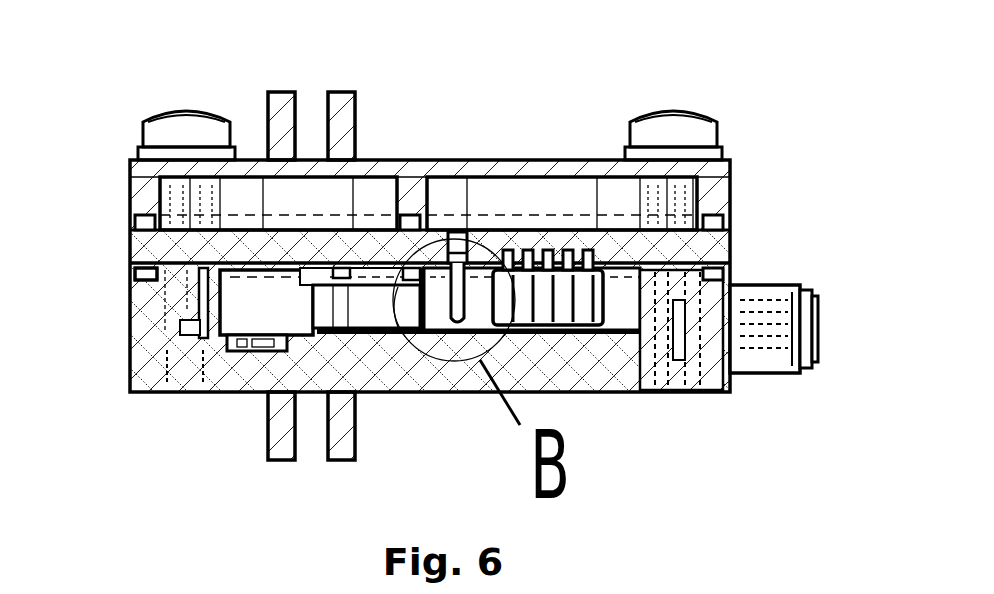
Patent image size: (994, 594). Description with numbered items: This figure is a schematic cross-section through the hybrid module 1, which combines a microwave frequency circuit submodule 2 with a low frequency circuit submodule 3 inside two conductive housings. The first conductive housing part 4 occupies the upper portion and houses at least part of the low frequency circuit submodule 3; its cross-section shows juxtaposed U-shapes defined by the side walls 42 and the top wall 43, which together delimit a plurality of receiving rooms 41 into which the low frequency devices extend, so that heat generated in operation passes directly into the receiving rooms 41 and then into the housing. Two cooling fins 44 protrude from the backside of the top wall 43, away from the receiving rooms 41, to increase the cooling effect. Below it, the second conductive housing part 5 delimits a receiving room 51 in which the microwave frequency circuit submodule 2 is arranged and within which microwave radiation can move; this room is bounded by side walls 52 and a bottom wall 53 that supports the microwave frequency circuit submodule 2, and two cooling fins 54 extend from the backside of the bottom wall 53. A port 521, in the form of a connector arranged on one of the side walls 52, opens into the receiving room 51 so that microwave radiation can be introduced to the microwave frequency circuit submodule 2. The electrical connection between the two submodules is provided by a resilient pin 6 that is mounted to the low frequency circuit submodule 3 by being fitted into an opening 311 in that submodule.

The hybrid module 1 is at (118, 80).
The microwave frequency circuit submodule 2 is at (628, 311).
The low frequency circuit submodule 3 is at (566, 266).
The first conductive housing part 4 is at (433, 147).
The second conductive housing part 5 is at (484, 319).
The resilient pin 6 is at (457, 307).
The receiving room 41 is at (290, 209).
The side wall 42 is at (155, 190).
The top wall 43 is at (442, 170).
The cooling fin 44 is at (270, 92).
The receiving room 51 is at (245, 316).
The side wall 52 is at (484, 313).
The bottom wall 53 is at (246, 382).
The cooling fin 54 is at (300, 460).
The opening 311 is at (455, 232).
The port 521 is at (808, 335).